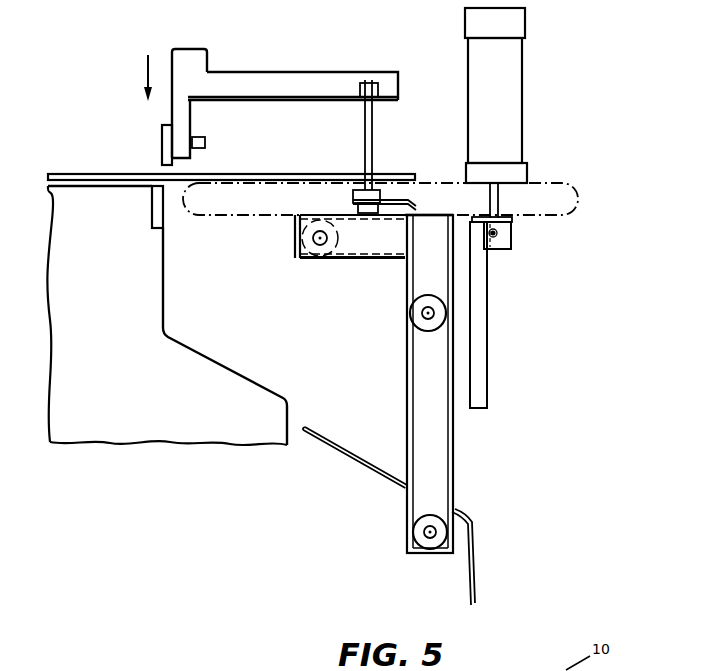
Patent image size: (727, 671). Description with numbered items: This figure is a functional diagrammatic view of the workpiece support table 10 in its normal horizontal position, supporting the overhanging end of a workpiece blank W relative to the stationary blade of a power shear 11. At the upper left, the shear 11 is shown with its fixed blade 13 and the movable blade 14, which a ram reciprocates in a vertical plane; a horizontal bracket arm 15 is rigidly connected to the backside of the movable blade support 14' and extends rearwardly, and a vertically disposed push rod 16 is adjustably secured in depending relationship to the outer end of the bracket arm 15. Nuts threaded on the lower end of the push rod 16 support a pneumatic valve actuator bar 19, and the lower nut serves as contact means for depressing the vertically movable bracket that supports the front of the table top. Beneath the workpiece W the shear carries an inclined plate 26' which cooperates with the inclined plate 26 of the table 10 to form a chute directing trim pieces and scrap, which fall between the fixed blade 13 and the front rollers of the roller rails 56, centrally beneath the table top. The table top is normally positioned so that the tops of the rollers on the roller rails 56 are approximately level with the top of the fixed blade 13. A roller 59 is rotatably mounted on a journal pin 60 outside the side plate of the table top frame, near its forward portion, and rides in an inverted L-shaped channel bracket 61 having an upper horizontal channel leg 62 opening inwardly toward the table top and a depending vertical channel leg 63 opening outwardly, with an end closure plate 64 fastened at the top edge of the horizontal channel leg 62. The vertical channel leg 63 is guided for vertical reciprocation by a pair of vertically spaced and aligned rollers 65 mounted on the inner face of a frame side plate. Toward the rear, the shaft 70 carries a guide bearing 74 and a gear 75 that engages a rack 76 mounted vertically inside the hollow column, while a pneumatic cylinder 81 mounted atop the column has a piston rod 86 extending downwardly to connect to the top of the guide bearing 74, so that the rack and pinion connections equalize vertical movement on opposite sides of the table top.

The workpiece support table 10 is at (534, 113).
The power shear 11 is at (110, 97).
The fixed blade 13 is at (164, 214).
The movable blade 14 is at (136, 141).
The movable blade support 14' is at (212, 103).
The horizontal bracket arm 15 is at (267, 77).
The push rod 16 is at (373, 123).
The pneumatic valve actuator bar 19 is at (387, 200).
The inclined plate 26 is at (355, 455).
The inclined plate 26' is at (167, 315).
The roller rail 56 is at (572, 193).
The roller 59 is at (305, 233).
The journal pin 60 is at (316, 243).
The channel bracket 61 is at (374, 268).
The horizontal channel leg 62 is at (310, 259).
The vertical channel leg 63 is at (407, 397).
The end closure plate 64 is at (425, 216).
The roller 65 is at (410, 314).
The shaft 70 is at (495, 234).
The guide bearing 74 is at (512, 227).
The gear 75 is at (495, 238).
The rack 76 is at (486, 380).
The pneumatic cylinder 81 is at (517, 92).
The piston rod 86 is at (498, 200).
The workpiece W is at (75, 177).